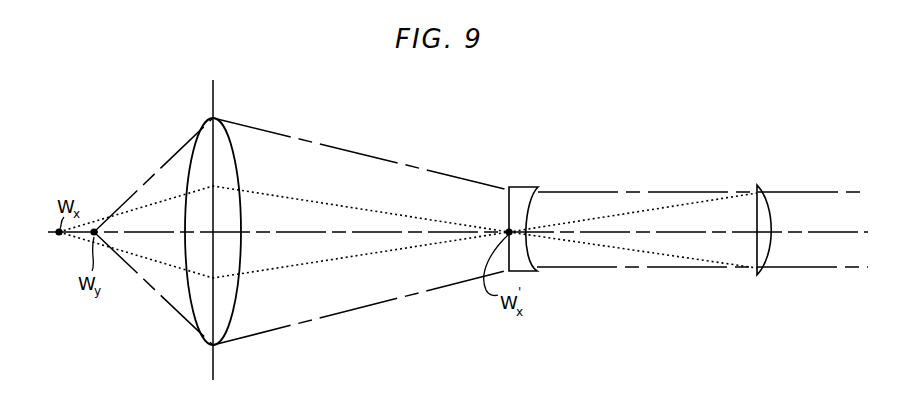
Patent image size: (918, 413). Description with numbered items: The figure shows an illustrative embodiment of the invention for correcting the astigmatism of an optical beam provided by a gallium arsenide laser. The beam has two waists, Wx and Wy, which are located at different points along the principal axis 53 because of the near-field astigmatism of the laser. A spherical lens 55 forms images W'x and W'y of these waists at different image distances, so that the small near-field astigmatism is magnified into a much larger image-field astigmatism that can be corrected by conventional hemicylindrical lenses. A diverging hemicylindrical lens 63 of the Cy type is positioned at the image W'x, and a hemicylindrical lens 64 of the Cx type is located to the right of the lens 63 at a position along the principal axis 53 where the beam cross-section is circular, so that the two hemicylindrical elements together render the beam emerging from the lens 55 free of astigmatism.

The lens 55 is at (227, 172).
The diverging hemicylindrical lens 63 is at (525, 187).
The hemicylindrical lens 64 is at (768, 217).
The principal axis 53 is at (823, 234).